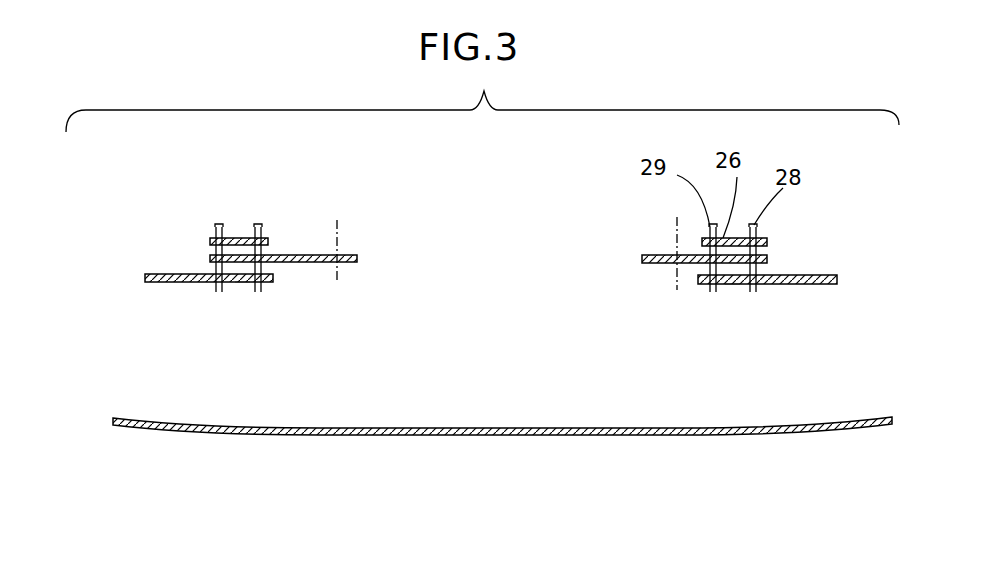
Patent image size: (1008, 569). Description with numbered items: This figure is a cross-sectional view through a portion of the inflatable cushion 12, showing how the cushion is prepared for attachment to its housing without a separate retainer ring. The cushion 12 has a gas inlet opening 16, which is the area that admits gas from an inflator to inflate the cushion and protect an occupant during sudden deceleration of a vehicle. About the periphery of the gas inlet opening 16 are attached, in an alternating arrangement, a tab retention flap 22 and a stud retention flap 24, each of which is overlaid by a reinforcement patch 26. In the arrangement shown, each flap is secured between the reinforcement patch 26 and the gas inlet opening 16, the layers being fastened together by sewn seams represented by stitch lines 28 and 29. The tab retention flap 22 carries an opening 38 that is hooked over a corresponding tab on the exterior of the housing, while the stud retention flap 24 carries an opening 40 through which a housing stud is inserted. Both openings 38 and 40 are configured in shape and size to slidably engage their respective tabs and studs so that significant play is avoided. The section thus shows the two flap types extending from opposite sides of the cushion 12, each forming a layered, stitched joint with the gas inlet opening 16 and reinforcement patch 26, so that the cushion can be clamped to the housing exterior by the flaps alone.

The cushion 12 is at (147, 273).
The gas inlet opening 16 is at (242, 282).
The tab retention flap 22 is at (300, 255).
The stud retention flap 24 is at (770, 257).
The reinforcement patch 26 is at (234, 236).
The stitch line 28 is at (218, 227).
The stitch line 29 is at (258, 224).
The tab retention flap opening 38 is at (340, 255).
The stud retention flap opening 40 is at (670, 257).